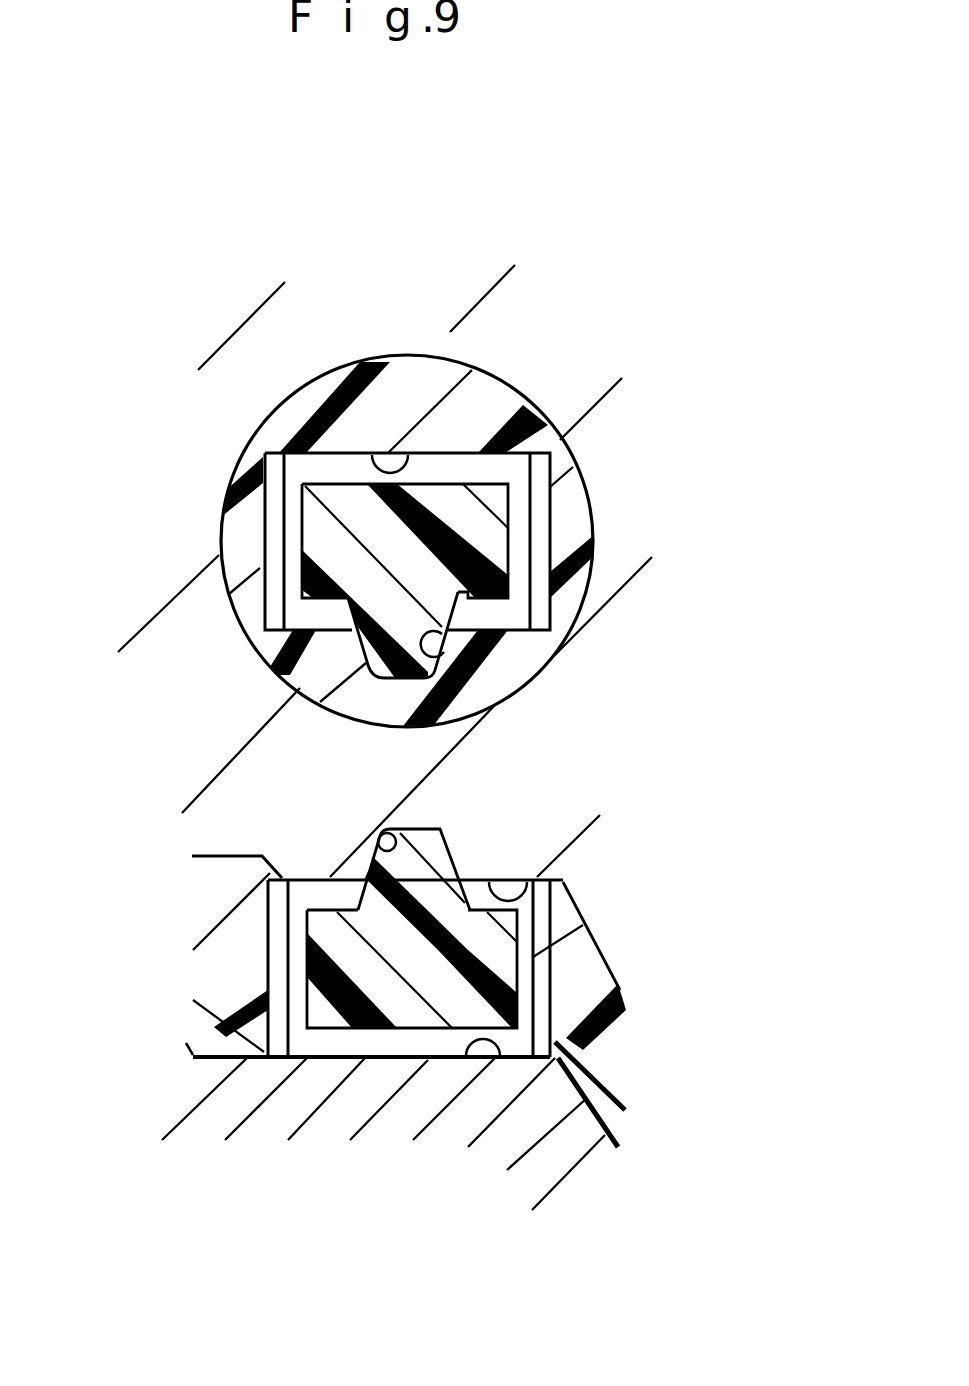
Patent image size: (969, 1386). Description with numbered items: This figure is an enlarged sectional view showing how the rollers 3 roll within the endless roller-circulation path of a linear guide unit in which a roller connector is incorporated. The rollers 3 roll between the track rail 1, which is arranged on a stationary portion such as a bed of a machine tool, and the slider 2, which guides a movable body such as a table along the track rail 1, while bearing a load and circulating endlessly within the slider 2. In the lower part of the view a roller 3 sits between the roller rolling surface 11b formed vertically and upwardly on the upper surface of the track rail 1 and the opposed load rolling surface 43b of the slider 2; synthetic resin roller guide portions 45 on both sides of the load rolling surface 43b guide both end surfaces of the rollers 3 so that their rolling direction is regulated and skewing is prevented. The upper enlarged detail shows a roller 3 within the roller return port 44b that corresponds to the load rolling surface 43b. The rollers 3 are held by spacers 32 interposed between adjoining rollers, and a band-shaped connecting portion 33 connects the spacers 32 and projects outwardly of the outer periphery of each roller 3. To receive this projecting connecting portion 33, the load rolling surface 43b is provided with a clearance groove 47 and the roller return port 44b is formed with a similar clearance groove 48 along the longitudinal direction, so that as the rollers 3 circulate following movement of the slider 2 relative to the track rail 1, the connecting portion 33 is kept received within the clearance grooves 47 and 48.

The track rail 1 is at (217, 1100).
The slider 2 is at (223, 800).
The rollers 3 is at (413, 1052).
The roller rolling surface 11b is at (465, 1053).
The spacer 32 is at (483, 537).
The connecting portion 33 is at (397, 620).
The load rolling surface 43b is at (565, 887).
The roller return port 44b is at (372, 453).
The roller guide portion 45 is at (215, 970).
The clearance groove 47 is at (372, 852).
The clearance groove 48 is at (448, 630).